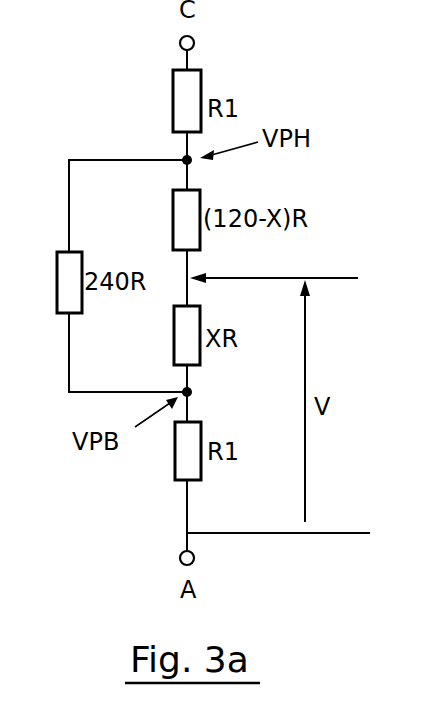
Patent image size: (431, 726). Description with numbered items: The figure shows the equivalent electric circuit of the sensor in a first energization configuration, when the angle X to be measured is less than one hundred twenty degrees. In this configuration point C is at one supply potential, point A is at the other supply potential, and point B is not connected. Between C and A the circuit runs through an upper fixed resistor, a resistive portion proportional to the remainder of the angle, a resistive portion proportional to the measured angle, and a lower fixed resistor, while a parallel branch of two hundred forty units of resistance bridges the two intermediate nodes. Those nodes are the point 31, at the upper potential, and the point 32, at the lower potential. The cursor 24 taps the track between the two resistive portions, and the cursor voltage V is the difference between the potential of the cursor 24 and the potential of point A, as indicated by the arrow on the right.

The point 31 is at (185, 158).
The point 32 is at (190, 394).
The cursor 24 is at (313, 277).